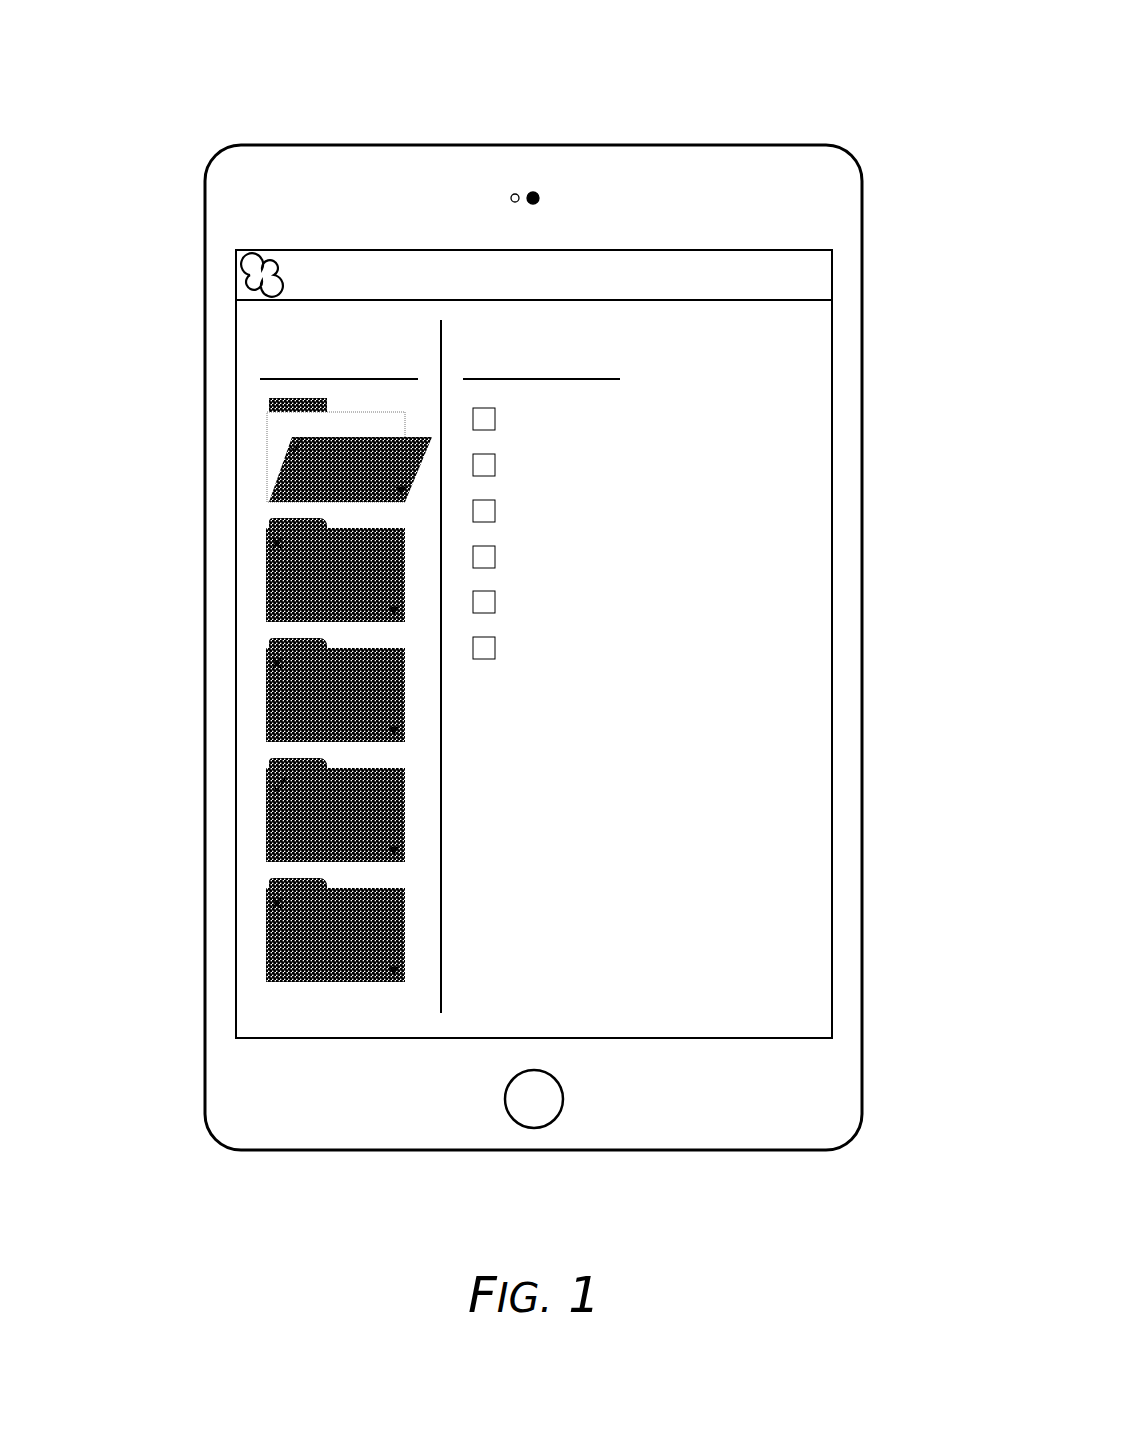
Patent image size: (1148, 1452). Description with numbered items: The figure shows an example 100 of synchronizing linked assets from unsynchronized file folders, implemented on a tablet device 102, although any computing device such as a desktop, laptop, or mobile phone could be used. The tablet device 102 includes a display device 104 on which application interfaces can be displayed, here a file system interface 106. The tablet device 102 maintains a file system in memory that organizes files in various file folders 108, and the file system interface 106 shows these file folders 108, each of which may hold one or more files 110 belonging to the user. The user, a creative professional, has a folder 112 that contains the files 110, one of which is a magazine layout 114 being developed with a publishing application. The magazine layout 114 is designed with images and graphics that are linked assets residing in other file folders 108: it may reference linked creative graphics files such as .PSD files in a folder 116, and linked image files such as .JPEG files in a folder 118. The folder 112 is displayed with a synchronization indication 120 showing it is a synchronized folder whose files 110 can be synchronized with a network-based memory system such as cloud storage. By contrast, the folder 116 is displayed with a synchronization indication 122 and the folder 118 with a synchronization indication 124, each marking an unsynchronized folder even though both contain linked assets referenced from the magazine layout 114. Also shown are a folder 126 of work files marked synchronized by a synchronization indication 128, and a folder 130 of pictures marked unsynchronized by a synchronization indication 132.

The example of synchronizing linked assets from unsynchronized file folders 100 is at (501, 582).
The tablet device 102 is at (415, 145).
The display device 104 is at (385, 250).
The file system interface 106 is at (636, 262).
The file folders 108 is at (248, 390).
The files 110 is at (574, 543).
The folder 112 is at (175, 438).
The magazine layout 114 is at (635, 402).
The folder 116 is at (175, 547).
The folder 118 is at (175, 667).
The synchronization indication 120 is at (292, 443).
The synchronization indication 122 is at (271, 542).
The synchronization indication 124 is at (271, 662).
The folder of work files 126 is at (175, 787).
The synchronization indication 128 is at (271, 782).
The folder of pictures 130 is at (175, 907).
The synchronization indication 132 is at (271, 902).